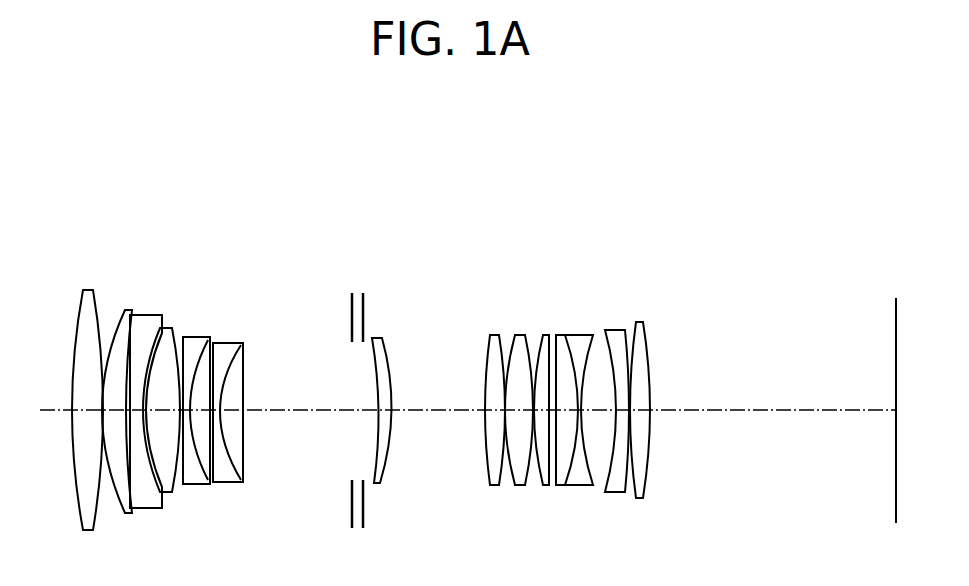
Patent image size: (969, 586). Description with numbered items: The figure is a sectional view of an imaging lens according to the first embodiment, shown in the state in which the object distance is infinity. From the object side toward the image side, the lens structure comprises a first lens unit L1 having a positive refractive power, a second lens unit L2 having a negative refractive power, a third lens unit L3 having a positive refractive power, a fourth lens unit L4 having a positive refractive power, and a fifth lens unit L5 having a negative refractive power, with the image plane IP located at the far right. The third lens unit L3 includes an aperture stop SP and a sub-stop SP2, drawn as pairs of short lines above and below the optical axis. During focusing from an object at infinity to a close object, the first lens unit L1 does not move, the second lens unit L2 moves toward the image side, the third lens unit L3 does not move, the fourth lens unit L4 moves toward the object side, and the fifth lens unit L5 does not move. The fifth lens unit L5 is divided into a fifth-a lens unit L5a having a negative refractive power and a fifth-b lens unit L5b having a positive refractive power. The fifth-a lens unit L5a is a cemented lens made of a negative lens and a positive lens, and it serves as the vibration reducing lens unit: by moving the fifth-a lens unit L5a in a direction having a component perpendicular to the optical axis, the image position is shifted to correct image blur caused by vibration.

The first lens unit L1 is at (154, 232).
The second lens unit L2 is at (249, 232).
The third lens unit L3 is at (397, 232).
The fourth lens unit L4 is at (547, 232).
The fifth lens unit L5 is at (600, 295).
The fifth-a lens unit L5a is at (595, 232).
The fifth-b lens unit L5b is at (648, 232).
The aperture stop SP is at (352, 293).
The sub-stop SP2 is at (363, 293).
The image plane IP is at (897, 312).